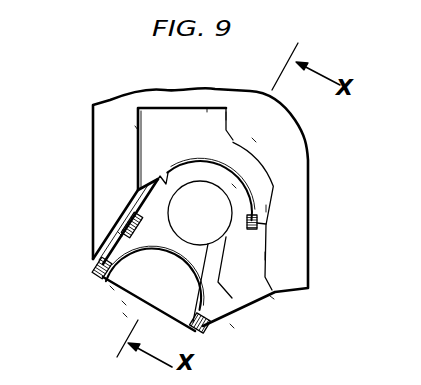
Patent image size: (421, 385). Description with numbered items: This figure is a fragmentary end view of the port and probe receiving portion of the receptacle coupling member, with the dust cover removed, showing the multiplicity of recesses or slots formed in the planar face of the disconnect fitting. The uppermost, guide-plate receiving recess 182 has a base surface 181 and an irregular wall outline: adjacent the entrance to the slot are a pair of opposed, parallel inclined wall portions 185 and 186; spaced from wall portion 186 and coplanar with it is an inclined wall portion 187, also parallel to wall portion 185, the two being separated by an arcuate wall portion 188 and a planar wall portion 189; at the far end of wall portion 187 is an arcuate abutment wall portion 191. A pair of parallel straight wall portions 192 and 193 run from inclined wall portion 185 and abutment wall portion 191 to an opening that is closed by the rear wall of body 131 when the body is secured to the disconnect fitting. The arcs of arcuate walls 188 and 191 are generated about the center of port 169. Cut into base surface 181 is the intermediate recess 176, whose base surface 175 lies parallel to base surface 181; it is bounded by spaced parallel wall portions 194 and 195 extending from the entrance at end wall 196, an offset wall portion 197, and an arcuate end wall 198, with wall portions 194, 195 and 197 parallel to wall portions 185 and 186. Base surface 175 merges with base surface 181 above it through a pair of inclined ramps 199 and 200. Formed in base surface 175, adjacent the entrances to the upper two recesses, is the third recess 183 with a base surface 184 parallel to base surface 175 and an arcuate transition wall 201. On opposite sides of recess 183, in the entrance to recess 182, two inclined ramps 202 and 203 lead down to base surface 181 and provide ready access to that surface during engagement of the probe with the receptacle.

The body 131 is at (170, 100).
The guide-plate receiving recess 182 is at (207, 122).
The straight wall portion 193 is at (227, 117).
The arcuate abutment wall portion 191 is at (255, 140).
The arcuate end wall 198 is at (252, 162).
The recess 176 is at (243, 182).
The base surface 175 is at (273, 190).
The inclined wall portion 187 is at (268, 208).
The inclined ramp 200 is at (266, 227).
The planar wall portion 189 is at (267, 256).
The arcuate wall portion 188 is at (272, 298).
The wall portion 195 is at (240, 317).
The inclined wall portion 186 is at (232, 326).
The inclined ramp 203 is at (208, 332).
The end wall 196 is at (125, 315).
The third recess 183 is at (124, 303).
The arcuate transition wall 201 is at (112, 288).
The inclined ramp 202 is at (97, 271).
The wall portion 194 is at (98, 253).
The inclined wall portion 185 is at (118, 235).
The inclined ramp 199 is at (122, 214).
The offset wall portion 197 is at (138, 186).
The straight wall portion 192 is at (137, 128).
The base surface 181 is at (187, 140).
The port 169 is at (213, 215).
The base surface 184 is at (181, 291).